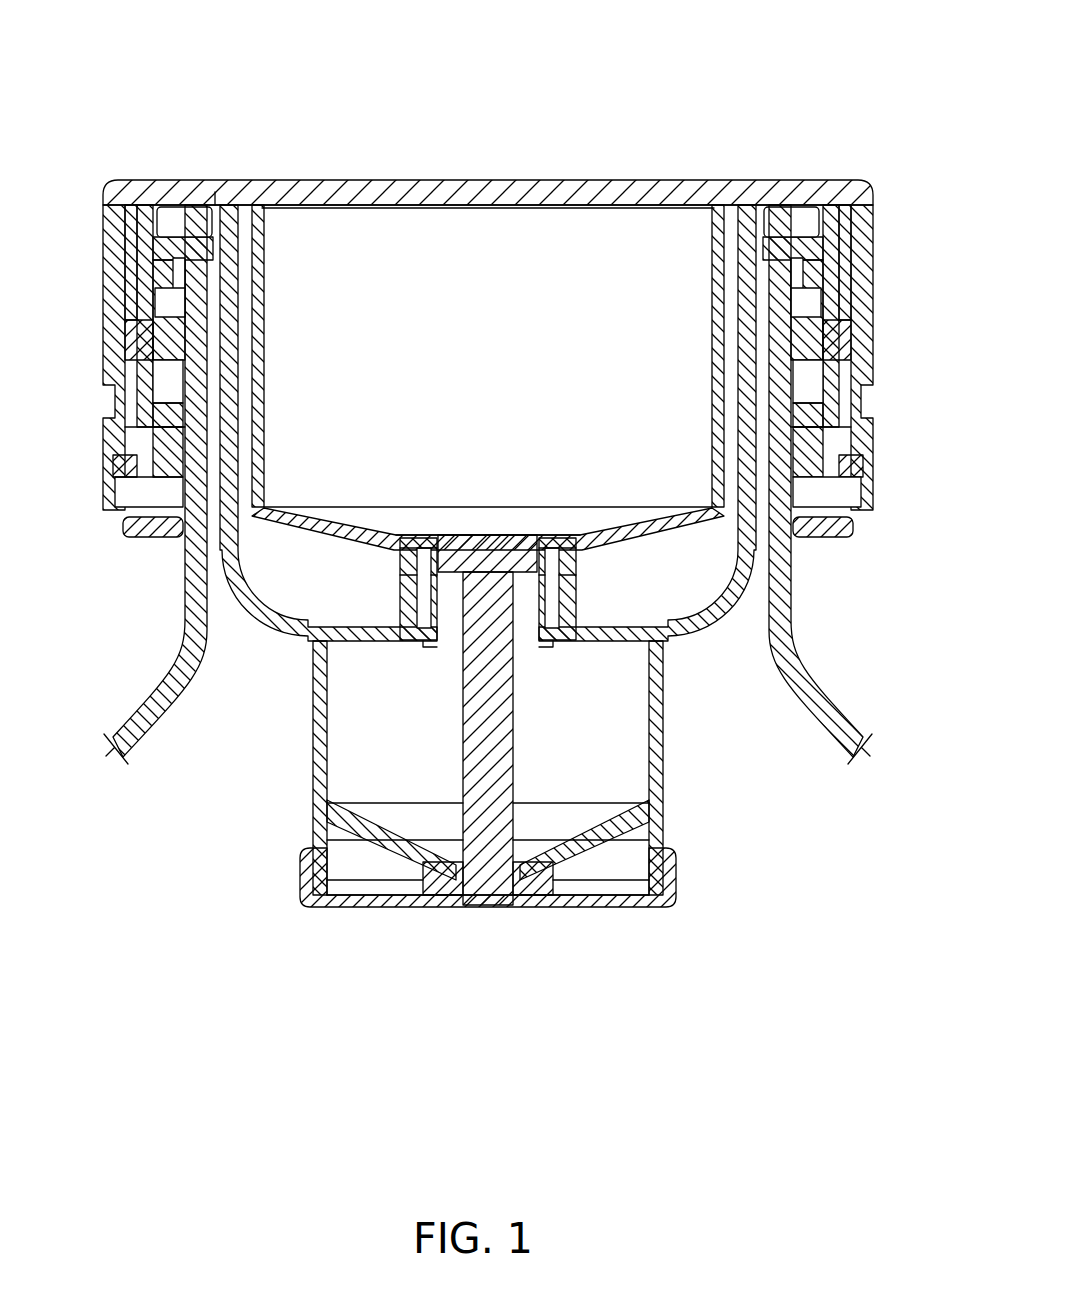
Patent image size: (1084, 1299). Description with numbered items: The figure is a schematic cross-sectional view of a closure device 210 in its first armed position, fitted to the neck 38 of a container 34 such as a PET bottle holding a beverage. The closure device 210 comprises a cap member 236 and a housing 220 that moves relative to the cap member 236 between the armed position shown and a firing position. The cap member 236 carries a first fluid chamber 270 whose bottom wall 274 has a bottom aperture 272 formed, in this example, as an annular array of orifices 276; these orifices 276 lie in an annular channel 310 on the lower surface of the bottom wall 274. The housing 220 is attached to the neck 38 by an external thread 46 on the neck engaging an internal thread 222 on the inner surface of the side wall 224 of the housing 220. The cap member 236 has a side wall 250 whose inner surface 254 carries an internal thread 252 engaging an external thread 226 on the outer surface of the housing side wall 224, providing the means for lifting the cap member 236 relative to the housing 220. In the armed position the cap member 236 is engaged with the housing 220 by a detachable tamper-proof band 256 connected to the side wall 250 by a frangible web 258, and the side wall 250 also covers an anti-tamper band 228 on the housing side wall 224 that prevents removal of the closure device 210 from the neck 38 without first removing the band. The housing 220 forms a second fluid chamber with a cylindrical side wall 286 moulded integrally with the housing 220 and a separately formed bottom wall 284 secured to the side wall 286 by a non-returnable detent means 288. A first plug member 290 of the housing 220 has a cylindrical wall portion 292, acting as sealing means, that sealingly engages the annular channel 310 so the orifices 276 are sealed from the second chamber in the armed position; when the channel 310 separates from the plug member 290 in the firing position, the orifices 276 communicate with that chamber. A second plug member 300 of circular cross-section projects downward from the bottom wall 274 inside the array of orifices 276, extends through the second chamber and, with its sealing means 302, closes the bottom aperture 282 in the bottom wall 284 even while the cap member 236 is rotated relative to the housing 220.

The closure device 210 is at (798, 88).
The cap member 236 is at (490, 182).
The side wall 250 is at (872, 248).
The inner surface 254 is at (136, 215).
The internal thread 252 is at (216, 192).
The external thread 226 is at (122, 345).
The external thread 46 is at (152, 420).
The internal thread 222 is at (852, 300).
The side wall 224 is at (860, 372).
The frangible web 258 is at (856, 410).
The tamper-proof band 256 is at (868, 462).
The anti-tamper band 228 is at (848, 498).
The neck 38 is at (792, 612).
The container 34 is at (840, 742).
The housing 220 is at (676, 640).
The first fluid chamber 270 is at (530, 333).
The orifices 276 is at (570, 520).
The bottom aperture 272 is at (424, 520).
The bottom wall 274 is at (660, 538).
The annular channel 310 is at (574, 615).
The cylindrical wall portion 292 is at (410, 562).
The first plug member 290 is at (402, 598).
The second plug member 300 is at (466, 776).
The cylindrical side wall 286 is at (664, 778).
The non-returnable detent means 288 is at (662, 840).
The sealing means 302 is at (372, 848).
The bottom aperture 282 is at (500, 905).
The bottom wall 284 is at (388, 878).